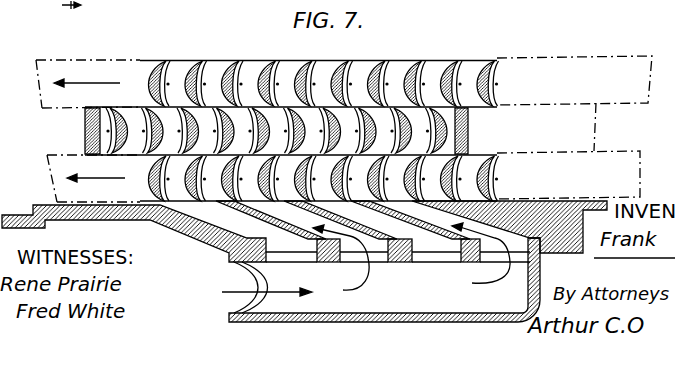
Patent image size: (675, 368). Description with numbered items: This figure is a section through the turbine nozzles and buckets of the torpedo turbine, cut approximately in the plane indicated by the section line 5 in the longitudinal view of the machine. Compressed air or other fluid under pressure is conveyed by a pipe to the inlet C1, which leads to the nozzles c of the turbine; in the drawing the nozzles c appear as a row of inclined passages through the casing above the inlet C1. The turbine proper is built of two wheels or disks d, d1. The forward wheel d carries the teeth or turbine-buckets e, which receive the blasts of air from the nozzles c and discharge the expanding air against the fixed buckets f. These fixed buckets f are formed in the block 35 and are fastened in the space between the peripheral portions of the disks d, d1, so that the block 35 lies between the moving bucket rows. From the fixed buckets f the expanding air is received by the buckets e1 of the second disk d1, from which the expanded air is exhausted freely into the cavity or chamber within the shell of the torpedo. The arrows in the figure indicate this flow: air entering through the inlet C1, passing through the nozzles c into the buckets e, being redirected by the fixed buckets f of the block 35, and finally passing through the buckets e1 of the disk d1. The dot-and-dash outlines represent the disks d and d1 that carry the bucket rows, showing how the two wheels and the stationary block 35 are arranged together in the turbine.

The section direction indicator 5 is at (71, 18).
The second wheel or disk d1 is at (344, 103).
The forward wheel or disk d is at (343, 176).
The turbine-buckets of the second disk e1 is at (418, 57).
The teeth or turbine-buckets e is at (478, 183).
The fixed buckets f is at (88, 140).
The block 35 is at (470, 128).
The nozzles c is at (373, 244).
The inlet C1 is at (381, 280).